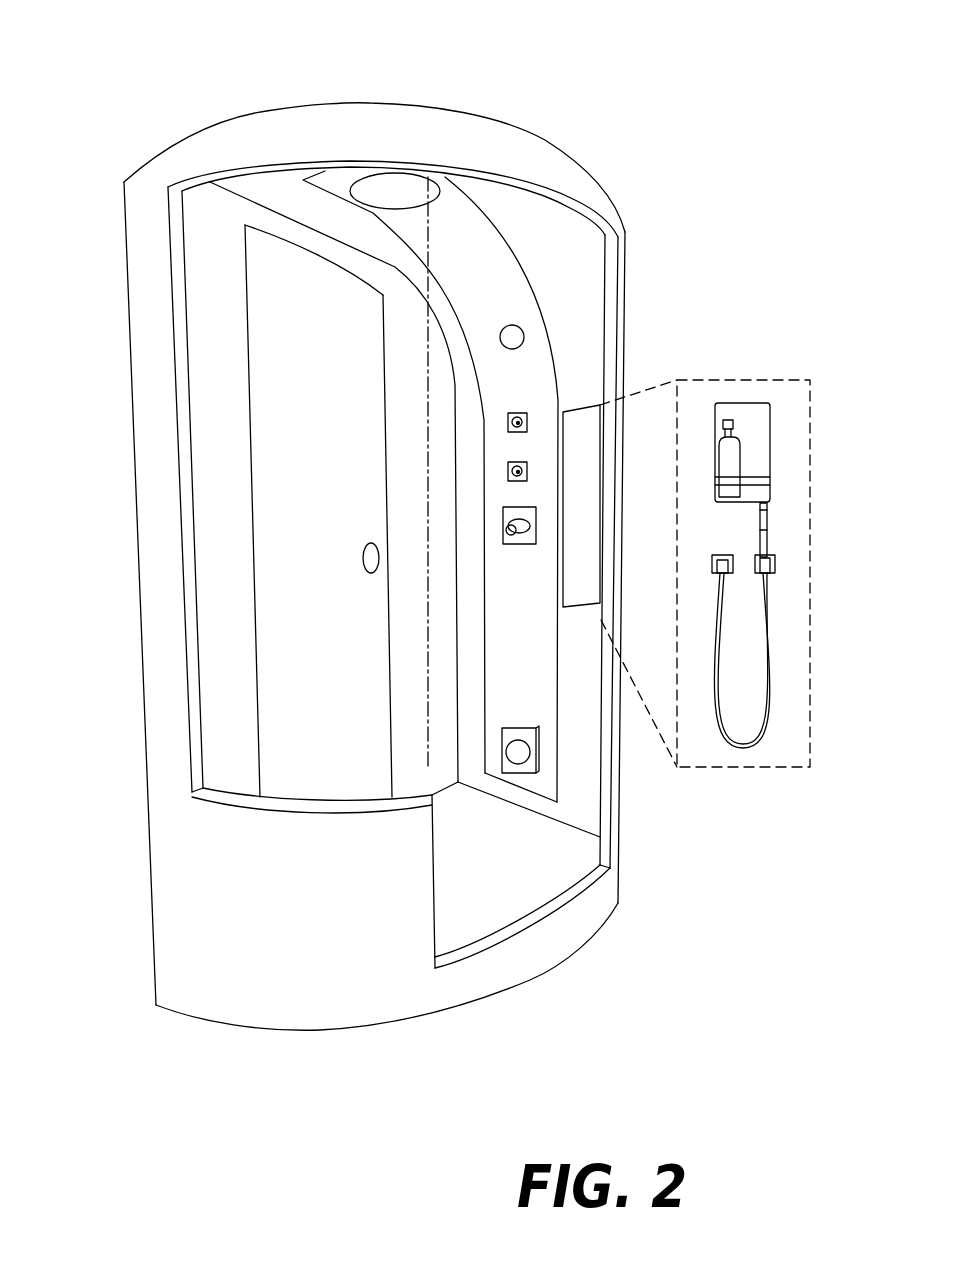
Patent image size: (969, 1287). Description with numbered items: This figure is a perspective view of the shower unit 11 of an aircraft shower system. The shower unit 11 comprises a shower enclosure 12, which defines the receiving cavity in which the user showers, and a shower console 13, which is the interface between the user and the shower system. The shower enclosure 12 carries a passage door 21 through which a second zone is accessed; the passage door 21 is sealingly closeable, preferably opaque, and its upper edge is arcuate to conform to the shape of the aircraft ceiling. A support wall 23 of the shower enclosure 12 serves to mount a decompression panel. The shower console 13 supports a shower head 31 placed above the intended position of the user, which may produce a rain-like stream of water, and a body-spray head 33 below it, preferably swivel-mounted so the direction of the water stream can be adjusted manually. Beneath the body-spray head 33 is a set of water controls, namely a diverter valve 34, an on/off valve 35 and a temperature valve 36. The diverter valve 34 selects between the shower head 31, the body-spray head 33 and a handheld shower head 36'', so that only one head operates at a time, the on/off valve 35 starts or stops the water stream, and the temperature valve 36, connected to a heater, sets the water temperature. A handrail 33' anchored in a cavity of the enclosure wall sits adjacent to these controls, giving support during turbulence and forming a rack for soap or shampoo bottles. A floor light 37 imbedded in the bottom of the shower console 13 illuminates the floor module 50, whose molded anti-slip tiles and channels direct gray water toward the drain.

The shower unit 11 is at (245, 103).
The shower enclosure 12 is at (145, 473).
The shower console 13 is at (492, 277).
The passage door 21 is at (256, 477).
The support wall 23 is at (215, 918).
The shower head 31 is at (423, 195).
The body-spray head 33 is at (584, 335).
The handrail 33' is at (796, 445).
The diverter valve 34 is at (520, 412).
The on/off valve 35 is at (527, 466).
The temperature valve 36 is at (586, 535).
The handheld shower head 36'' is at (808, 625).
The floor light 37 is at (520, 755).
The floor module 50 is at (515, 883).